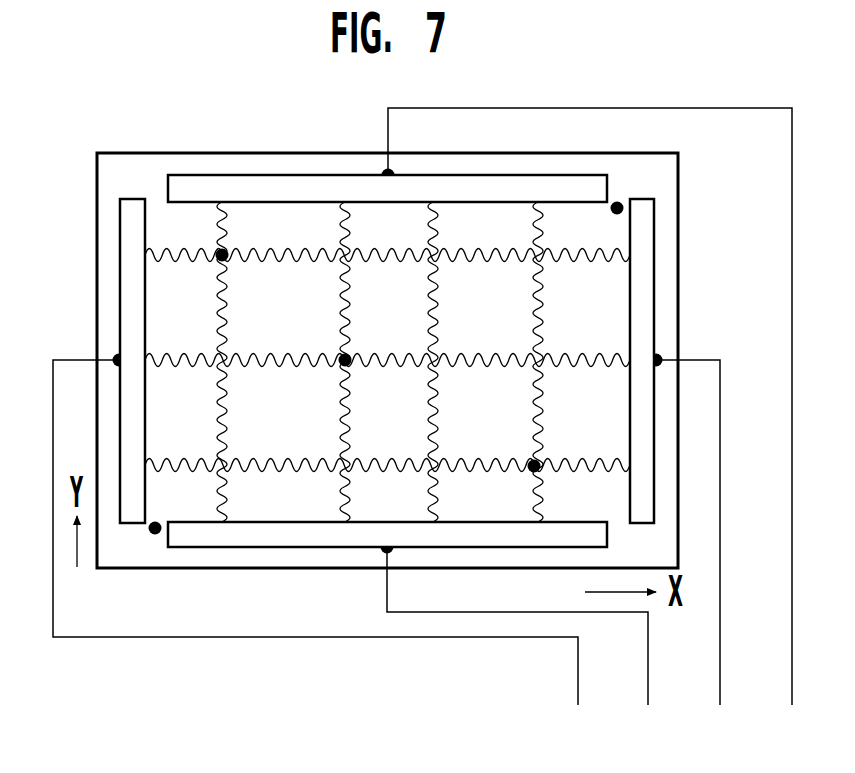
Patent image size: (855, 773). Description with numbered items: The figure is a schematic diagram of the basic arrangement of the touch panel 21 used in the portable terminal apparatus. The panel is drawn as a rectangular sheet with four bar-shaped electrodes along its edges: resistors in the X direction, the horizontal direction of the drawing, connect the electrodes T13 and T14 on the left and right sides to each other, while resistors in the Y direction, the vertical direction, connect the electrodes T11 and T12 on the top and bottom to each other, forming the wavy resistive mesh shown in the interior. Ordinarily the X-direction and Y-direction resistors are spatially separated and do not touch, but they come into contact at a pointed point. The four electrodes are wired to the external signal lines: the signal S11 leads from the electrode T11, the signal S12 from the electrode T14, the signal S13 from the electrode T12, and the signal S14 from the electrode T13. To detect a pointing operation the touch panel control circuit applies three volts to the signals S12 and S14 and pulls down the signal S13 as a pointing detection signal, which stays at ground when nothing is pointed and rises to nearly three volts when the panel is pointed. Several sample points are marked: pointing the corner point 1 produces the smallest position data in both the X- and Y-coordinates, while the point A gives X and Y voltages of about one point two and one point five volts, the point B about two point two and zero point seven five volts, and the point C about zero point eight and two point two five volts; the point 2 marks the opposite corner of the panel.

The touch panel 21 is at (380, 315).
The electrode T11 is at (387, 153).
The electrode T12 is at (387, 571).
The electrode T13 is at (83, 361).
The electrode T14 is at (695, 361).
The signal S11 is at (599, 430).
The signal S12 is at (698, 556).
The signal S13 is at (529, 650).
The signal S14 is at (326, 556).
The point A is at (372, 327).
The point B is at (504, 435).
The point C is at (251, 280).
The point 1 is at (176, 505).
The point 2 is at (589, 223).